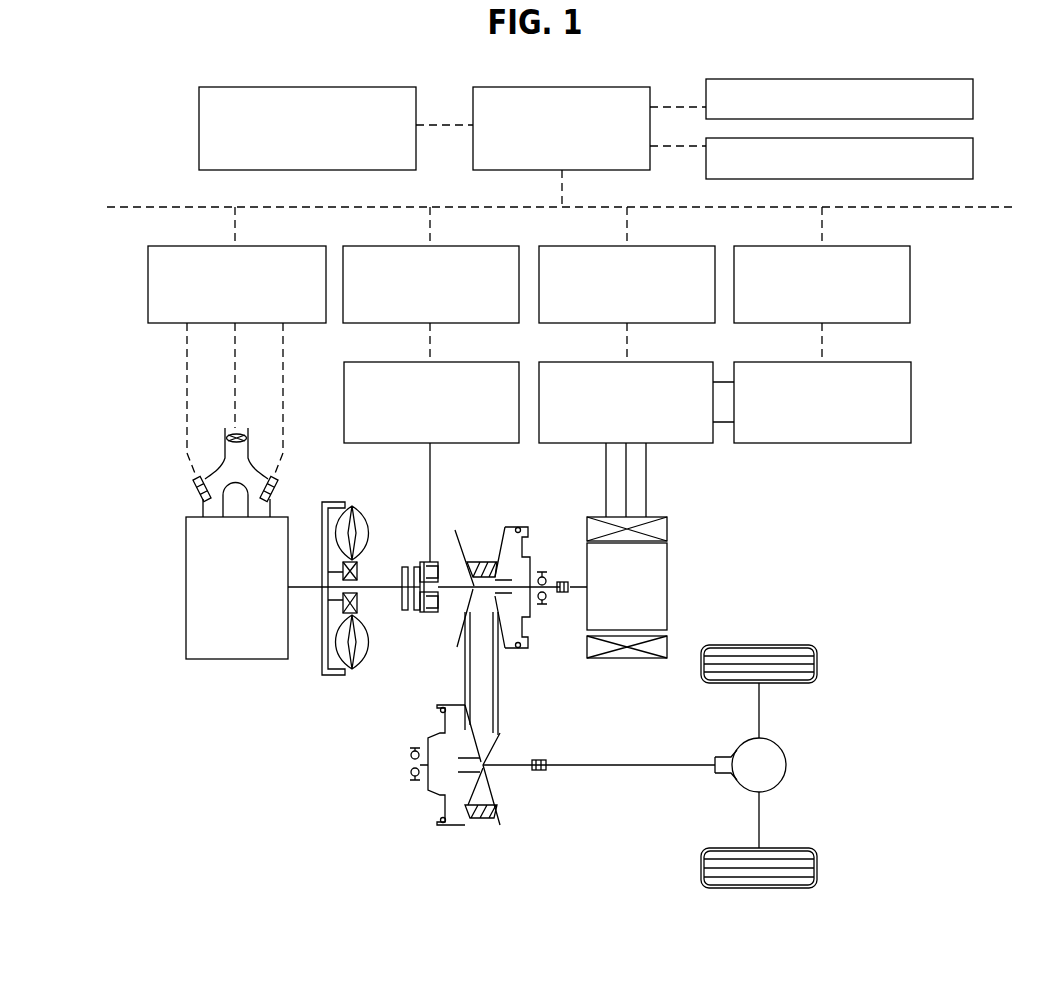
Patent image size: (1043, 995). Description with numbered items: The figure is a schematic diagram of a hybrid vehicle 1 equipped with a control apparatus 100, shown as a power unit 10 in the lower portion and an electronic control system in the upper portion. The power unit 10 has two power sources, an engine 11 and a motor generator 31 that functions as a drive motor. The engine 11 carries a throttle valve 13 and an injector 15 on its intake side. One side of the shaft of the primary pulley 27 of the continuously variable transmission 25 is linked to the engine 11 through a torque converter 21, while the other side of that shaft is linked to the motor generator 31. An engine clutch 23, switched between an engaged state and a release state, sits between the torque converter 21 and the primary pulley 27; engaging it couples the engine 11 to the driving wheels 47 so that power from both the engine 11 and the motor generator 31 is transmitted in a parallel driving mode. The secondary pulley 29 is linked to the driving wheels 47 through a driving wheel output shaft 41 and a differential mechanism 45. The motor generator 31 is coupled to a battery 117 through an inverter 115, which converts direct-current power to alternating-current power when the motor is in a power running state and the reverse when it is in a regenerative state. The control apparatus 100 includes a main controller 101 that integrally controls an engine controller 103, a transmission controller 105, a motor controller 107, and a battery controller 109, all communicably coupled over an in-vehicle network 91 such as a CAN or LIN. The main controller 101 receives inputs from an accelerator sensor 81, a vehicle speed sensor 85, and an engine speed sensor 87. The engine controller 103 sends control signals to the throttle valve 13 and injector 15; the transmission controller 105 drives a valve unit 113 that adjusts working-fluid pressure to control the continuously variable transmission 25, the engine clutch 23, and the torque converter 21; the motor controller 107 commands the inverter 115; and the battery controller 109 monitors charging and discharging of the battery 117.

The hybrid vehicle 1 is at (983, 658).
The power unit 10 is at (269, 747).
The engine 11 is at (232, 659).
The throttle valve 13 is at (248, 437).
The injector 15 is at (195, 488).
The torque converter 21 is at (333, 500).
The engine clutch 23 is at (418, 622).
The continuously variable transmission 25 is at (471, 692).
The primary pulley 27 is at (523, 625).
The secondary pulley 29 is at (440, 733).
The motor generator 31 is at (668, 568).
The driving wheel output shaft 41 is at (566, 763).
The differential mechanism 45 is at (787, 757).
The driving wheels 47 is at (783, 645).
The accelerator sensor 81 is at (199, 127).
The vehicle speed sensor 85 is at (975, 103).
The engine speed sensor 87 is at (975, 162).
The in-vehicle network 91 is at (135, 207).
The control apparatus 100 is at (120, 135).
The main controller 101 is at (606, 87).
The engine controller 103 is at (283, 246).
The transmission controller 105 is at (478, 246).
The motor controller 107 is at (668, 246).
The battery controller 109 is at (868, 246).
The valve unit 113 is at (475, 362).
The inverter 115 is at (668, 362).
The battery 117 is at (865, 362).